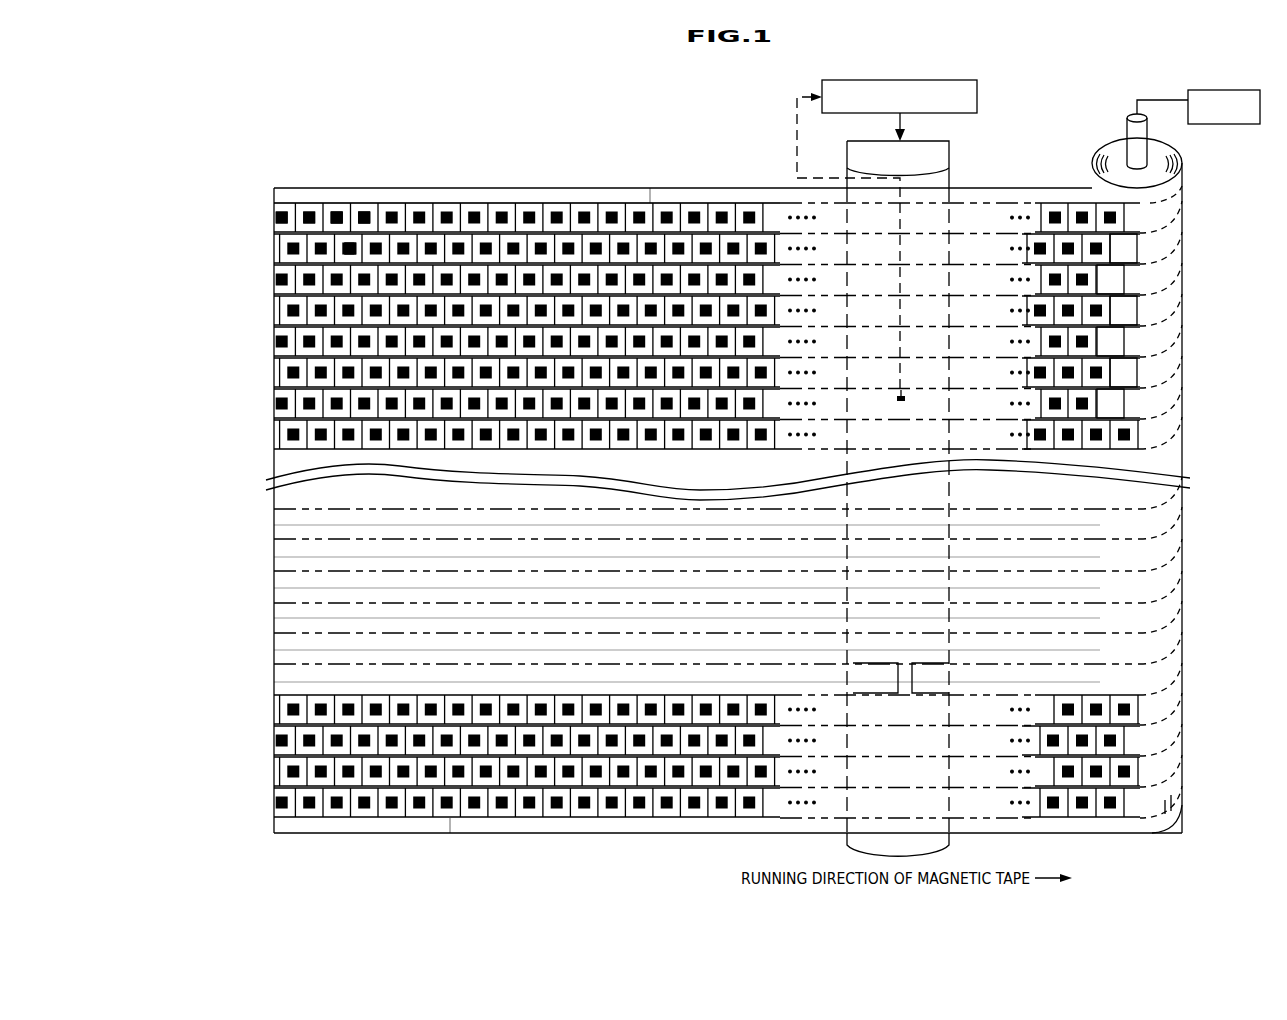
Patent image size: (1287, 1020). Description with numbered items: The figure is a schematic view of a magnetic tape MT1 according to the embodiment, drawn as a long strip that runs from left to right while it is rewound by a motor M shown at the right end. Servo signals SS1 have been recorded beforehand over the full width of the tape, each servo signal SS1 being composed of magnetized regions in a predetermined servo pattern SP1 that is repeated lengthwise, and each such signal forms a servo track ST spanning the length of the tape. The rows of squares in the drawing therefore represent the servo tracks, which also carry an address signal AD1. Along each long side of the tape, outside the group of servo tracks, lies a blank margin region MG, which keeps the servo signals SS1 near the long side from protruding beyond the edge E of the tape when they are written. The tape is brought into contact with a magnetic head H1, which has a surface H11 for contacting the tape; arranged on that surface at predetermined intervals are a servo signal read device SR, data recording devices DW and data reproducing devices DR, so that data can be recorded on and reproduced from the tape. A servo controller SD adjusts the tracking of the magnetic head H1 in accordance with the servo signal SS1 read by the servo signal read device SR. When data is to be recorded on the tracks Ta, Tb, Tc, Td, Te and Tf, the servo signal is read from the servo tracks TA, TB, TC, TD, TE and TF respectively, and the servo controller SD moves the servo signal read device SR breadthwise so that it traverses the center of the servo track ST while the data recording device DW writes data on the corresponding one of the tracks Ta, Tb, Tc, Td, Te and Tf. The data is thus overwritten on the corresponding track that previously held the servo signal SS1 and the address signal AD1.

The magnetic tape MT1 is at (556, 105).
The address signal AD1 is at (308, 212).
The servo signal SS1 is at (350, 243).
The servo pattern SP1 is at (444, 207).
The edge E is at (585, 188).
The margin region MG is at (651, 197).
The servo track ST is at (266, 282).
The servo controller SD is at (978, 96).
The magnetic head H1 is at (976, 489).
The surface H11 is at (950, 186).
The servo signal read device SR is at (890, 401).
The data recording device DW is at (875, 678).
The data reproducing device DR is at (930, 678).
The motor M is at (1242, 126).
The servo track A TA is at (1209, 525).
The servo track B TB is at (1220, 557).
The servo track C TC is at (1232, 588).
The servo track D TD is at (1243, 618).
The servo track E TE is at (1253, 650).
The servo track F TF is at (1264, 682).
The track a Ta is at (1209, 525).
The track b Tb is at (1220, 557).
The track c Tc is at (1232, 588).
The track d Td is at (1243, 618).
The track e Te is at (1253, 650).
The track f Tf is at (1264, 682).